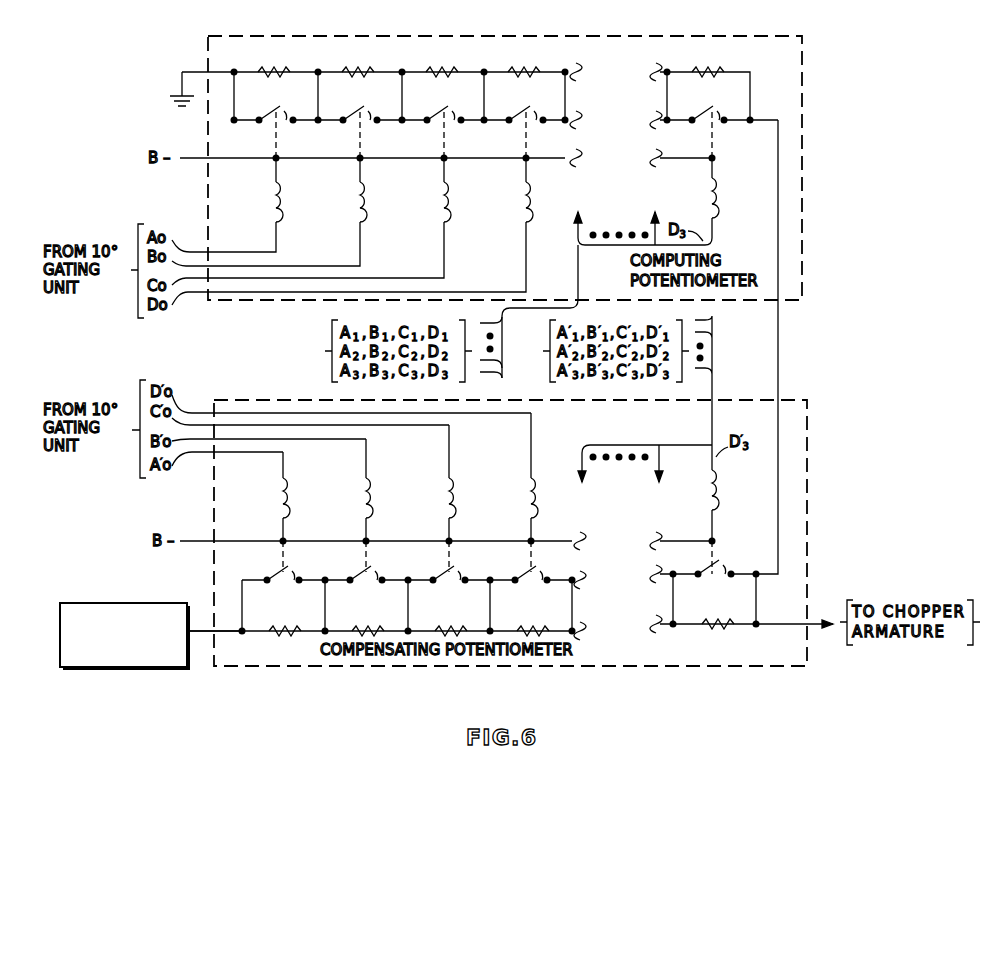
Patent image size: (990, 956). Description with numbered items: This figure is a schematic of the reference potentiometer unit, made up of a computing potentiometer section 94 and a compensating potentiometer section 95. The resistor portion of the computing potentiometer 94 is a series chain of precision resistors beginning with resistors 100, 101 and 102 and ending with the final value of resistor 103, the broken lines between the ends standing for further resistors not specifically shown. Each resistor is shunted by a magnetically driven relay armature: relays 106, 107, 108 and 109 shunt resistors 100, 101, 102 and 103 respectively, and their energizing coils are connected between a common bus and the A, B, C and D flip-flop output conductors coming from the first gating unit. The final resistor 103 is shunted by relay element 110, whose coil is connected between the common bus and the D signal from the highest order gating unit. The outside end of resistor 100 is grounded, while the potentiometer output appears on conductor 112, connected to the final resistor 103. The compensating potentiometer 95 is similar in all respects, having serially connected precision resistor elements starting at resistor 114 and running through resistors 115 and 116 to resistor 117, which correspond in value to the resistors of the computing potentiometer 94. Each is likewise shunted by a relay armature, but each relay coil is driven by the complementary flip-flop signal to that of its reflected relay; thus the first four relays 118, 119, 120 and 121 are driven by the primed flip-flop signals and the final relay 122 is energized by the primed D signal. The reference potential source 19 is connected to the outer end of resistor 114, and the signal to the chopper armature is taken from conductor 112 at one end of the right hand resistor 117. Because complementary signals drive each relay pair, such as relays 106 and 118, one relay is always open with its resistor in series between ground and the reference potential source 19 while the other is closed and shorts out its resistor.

The computing potentiometer section 94 is at (803, 97).
The compensating potentiometer section 95 is at (678, 664).
The precision resistor 100 is at (288, 69).
The precision resistor 101 is at (372, 69).
The precision resistor 102 is at (456, 69).
The precision resistor 103 is at (538, 69).
The relay 106 is at (282, 108).
The relay 107 is at (366, 108).
The relay 108 is at (450, 108).
The relay 109 is at (532, 108).
The relay element 110 is at (714, 108).
The conductor 112 is at (778, 340).
The precision resistor element 114 is at (266, 627).
The precision resistor element 115 is at (349, 627).
The precision resistor element 116 is at (432, 627).
The precision resistor element 117 is at (514, 627).
The relay 118 is at (294, 572).
The relay 119 is at (377, 572).
The relay 120 is at (460, 572).
The relay 121 is at (542, 572).
The relay 122 is at (728, 565).
The reference potential source 19 is at (137, 603).